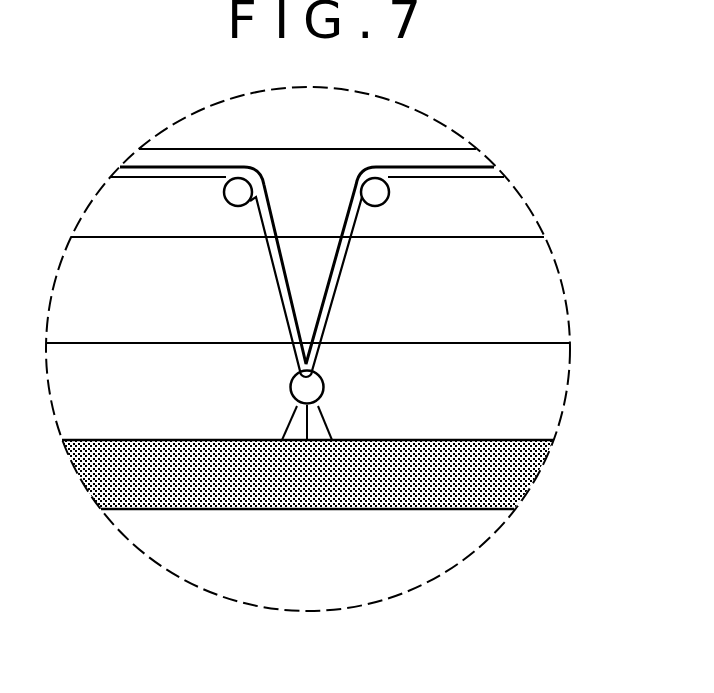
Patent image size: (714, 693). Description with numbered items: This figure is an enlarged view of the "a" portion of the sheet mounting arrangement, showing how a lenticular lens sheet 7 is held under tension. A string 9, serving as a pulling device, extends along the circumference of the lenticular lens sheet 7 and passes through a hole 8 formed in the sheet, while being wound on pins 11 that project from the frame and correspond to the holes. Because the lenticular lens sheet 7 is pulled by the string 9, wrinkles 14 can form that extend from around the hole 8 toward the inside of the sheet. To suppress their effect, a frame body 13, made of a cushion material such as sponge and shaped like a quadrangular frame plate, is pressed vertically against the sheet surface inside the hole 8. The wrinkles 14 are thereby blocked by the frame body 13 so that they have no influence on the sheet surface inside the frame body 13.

The "a" portion a is at (535, 208).
The lenticular lens sheet 7 is at (480, 343).
The hole 8 is at (313, 387).
The string 9 is at (283, 283).
The pin 11 is at (235, 195).
The frame body 13 is at (320, 490).
The wrinkle 14 is at (287, 423).